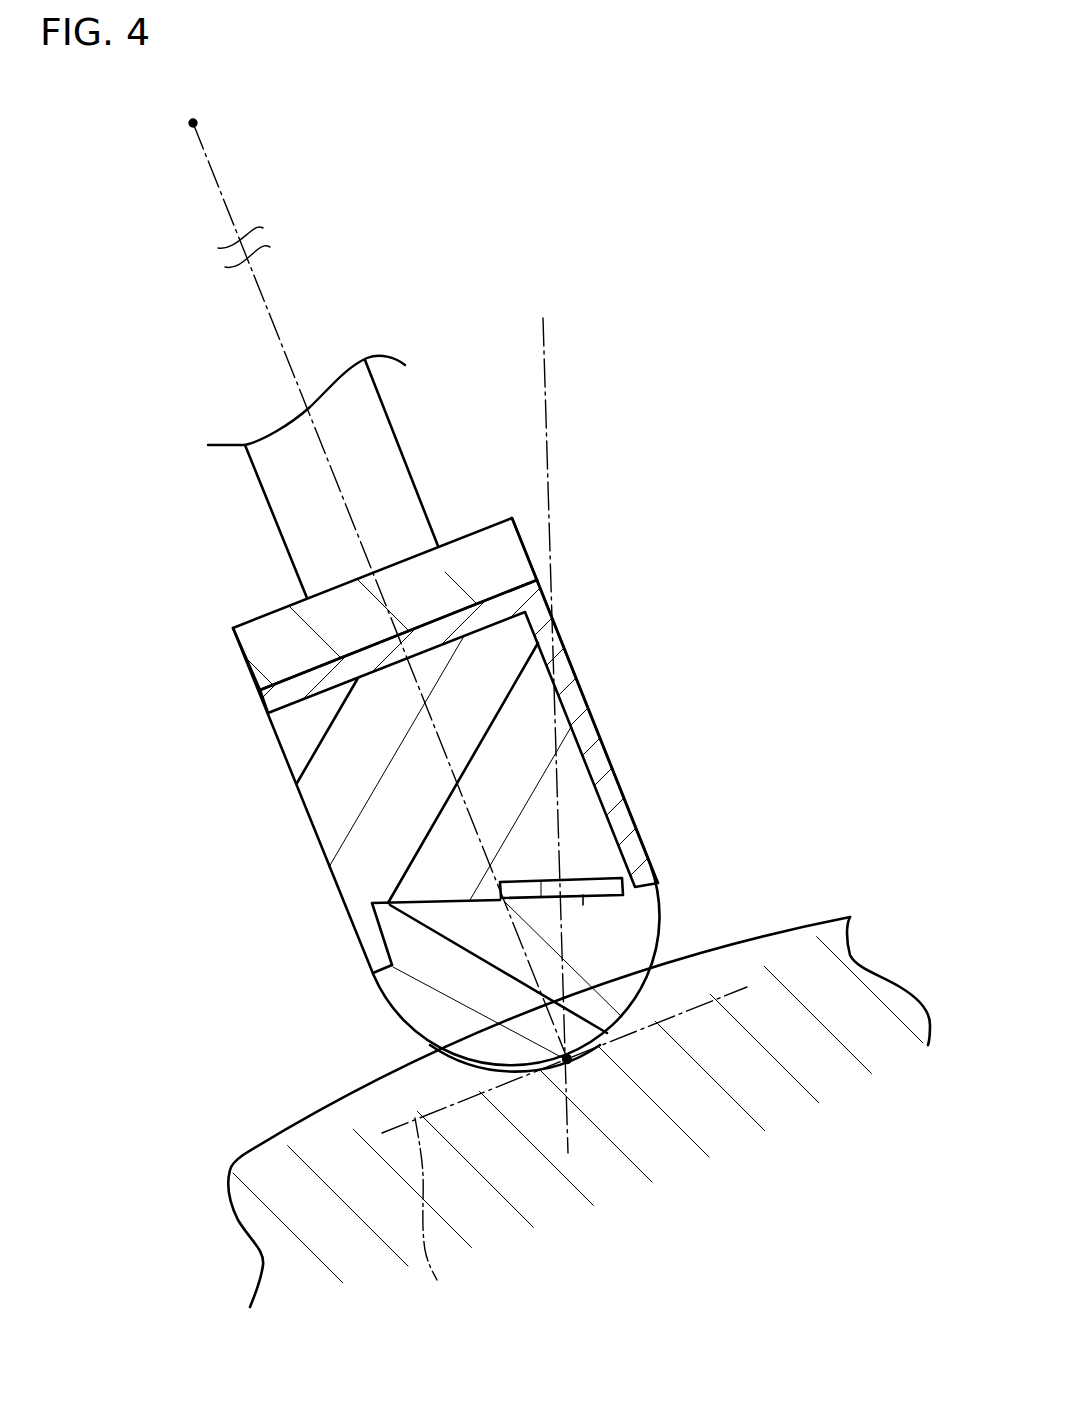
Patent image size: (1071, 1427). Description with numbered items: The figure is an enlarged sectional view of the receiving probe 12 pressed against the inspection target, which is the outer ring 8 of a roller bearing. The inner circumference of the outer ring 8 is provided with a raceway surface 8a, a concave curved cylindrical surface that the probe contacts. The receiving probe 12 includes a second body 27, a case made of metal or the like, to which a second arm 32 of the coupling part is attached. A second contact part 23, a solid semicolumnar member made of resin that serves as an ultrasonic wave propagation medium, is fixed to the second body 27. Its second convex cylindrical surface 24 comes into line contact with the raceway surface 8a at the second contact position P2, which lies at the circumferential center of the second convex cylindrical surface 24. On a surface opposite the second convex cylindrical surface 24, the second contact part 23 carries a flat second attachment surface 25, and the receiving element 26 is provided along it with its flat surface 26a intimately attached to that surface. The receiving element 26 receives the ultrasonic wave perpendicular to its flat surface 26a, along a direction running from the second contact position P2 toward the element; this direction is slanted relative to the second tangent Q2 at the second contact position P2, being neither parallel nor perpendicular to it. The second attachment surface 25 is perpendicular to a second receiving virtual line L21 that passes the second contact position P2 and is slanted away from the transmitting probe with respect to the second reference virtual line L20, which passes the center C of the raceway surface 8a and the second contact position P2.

The center of the raceway surface C is at (193, 123).
The second reference virtual line L20 is at (278, 339).
The second receiving virtual line L21 is at (563, 973).
The second contact position P2 is at (570, 1063).
The second tangent Q2 is at (433, 1218).
The outer ring 8 is at (503, 1177).
The raceway surface 8a is at (300, 1140).
The receiving probe 12 is at (601, 729).
The second contact part 23 is at (422, 998).
The second convex cylindrical surface 24 is at (473, 1060).
The second attachment surface 25 is at (538, 898).
The receiving element 26 is at (586, 880).
The flat surface of the receiving element 26a is at (583, 898).
The second body 27 is at (570, 687).
The second arm 32 is at (273, 518).